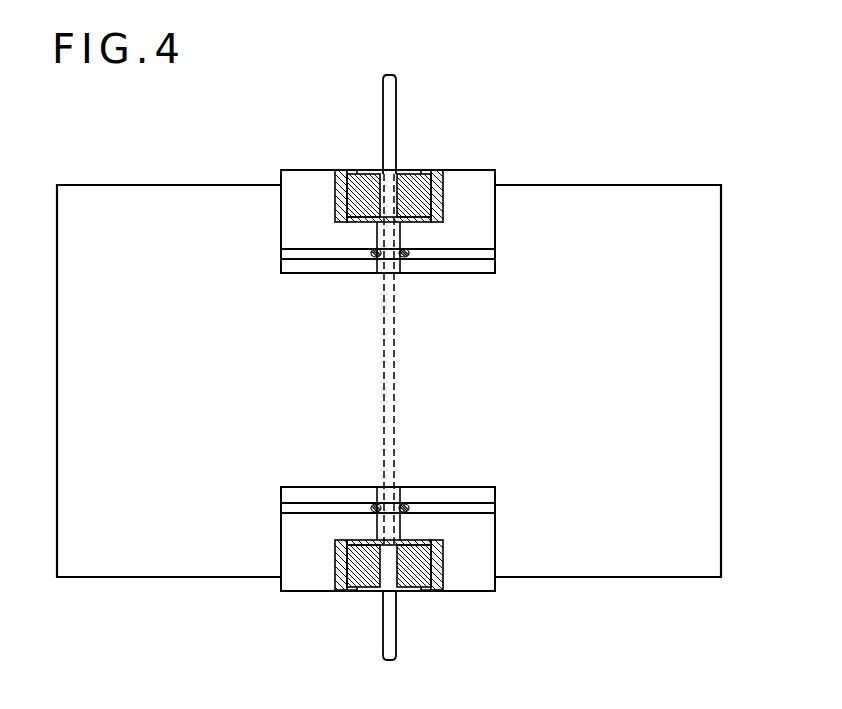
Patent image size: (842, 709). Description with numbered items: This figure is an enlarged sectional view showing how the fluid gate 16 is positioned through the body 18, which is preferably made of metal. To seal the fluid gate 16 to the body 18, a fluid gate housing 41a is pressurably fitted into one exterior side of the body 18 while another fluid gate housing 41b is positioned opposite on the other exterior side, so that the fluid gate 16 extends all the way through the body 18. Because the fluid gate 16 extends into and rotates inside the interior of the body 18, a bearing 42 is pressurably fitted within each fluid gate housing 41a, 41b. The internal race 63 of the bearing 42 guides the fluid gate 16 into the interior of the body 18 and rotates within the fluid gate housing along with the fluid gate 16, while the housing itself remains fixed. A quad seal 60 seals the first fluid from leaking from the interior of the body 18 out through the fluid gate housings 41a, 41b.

The fluid gate 16 is at (391, 97).
The body 18 is at (660, 185).
The fluid gate housing 41a is at (305, 188).
The fluid gate housing 41b is at (470, 592).
The bearing 42 is at (370, 582).
The quad seal 60 is at (410, 253).
The internal race 63 is at (382, 172).